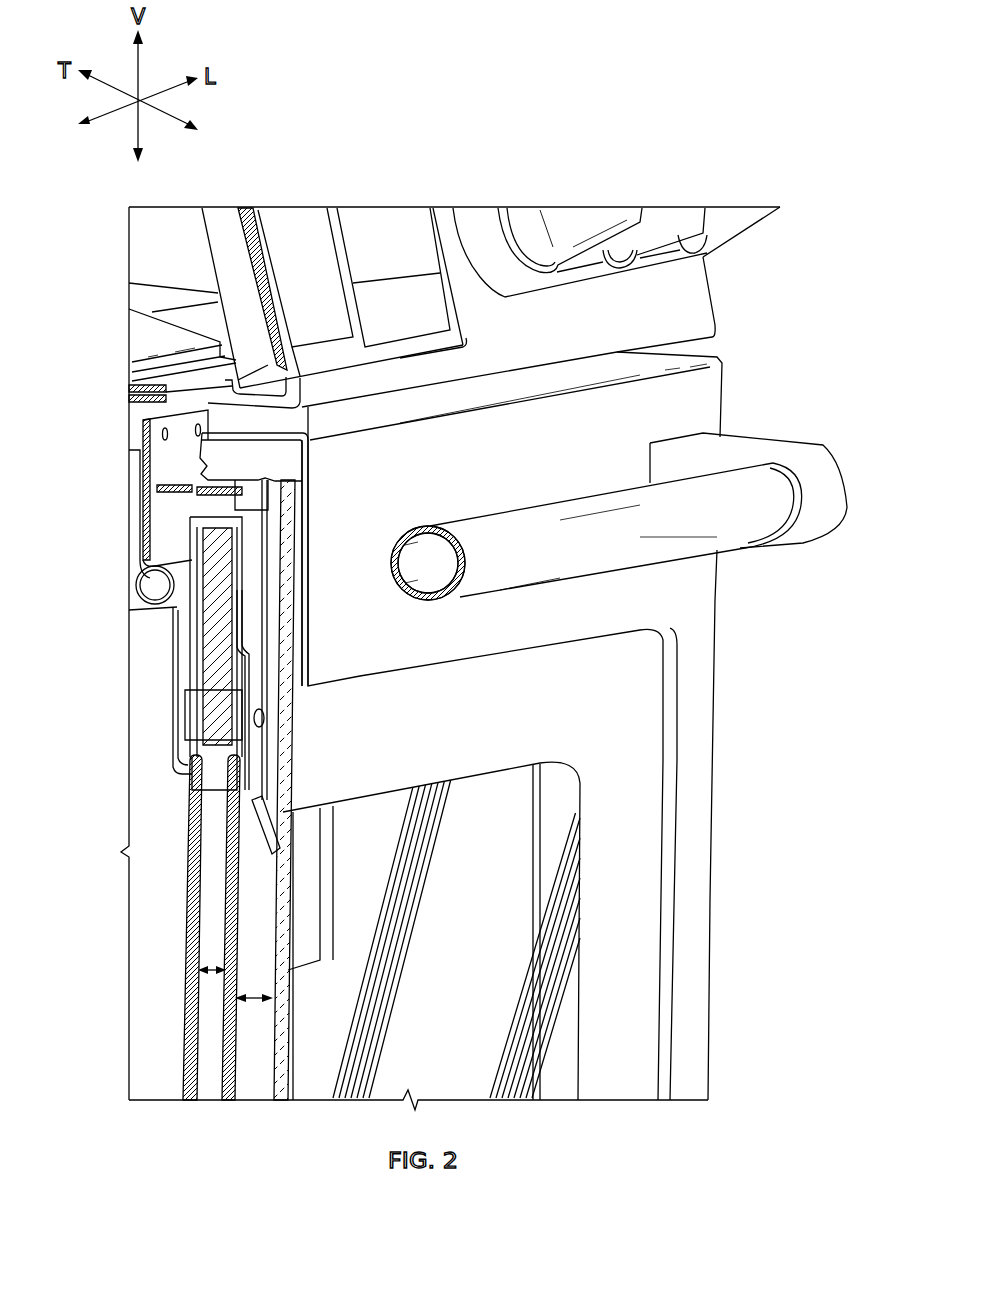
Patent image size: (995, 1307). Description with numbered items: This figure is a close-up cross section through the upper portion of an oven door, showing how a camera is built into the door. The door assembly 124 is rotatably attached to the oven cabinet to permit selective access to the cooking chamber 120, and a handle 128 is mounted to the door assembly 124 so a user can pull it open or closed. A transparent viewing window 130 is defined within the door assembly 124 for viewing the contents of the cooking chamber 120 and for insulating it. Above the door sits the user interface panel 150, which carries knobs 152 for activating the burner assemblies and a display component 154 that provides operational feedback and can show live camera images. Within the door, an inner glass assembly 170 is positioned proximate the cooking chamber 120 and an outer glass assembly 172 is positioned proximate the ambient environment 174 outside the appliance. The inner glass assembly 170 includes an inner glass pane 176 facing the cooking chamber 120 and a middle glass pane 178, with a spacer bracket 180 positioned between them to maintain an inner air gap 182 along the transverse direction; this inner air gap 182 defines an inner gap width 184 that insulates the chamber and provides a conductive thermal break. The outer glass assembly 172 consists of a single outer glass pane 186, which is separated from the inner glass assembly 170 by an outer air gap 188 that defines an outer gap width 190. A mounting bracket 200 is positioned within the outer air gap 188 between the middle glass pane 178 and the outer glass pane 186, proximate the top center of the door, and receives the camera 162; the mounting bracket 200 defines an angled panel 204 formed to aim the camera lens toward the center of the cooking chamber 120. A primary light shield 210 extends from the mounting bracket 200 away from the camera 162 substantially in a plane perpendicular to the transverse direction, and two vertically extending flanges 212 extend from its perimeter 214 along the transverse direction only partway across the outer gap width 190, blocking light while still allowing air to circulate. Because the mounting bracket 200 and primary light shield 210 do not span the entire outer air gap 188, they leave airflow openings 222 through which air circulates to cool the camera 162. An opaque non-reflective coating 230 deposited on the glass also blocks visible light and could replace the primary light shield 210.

The cooking chamber 120 is at (156, 910).
The door assembly 124 is at (710, 850).
The handle 128 is at (753, 497).
The transparent viewing window 130 is at (543, 1044).
The user interface panel 150 is at (692, 308).
The knobs 152 is at (592, 228).
The display component 154 is at (290, 237).
The camera 162 is at (242, 824).
The inner glass assembly 170 is at (232, 1106).
The outer glass assembly 172 is at (257, 1104).
The ambient environment 174 is at (820, 927).
The inner glass pane 176 is at (183, 1081).
The middle glass pane 178 is at (223, 1043).
The spacer bracket 180 is at (197, 752).
The inner air gap 182 is at (206, 943).
The inner gap width 184 is at (212, 975).
The outer glass pane 186 is at (277, 1010).
The outer air gap 188 is at (260, 1091).
The outer gap width 190 is at (254, 1002).
The mounting bracket 200 is at (256, 847).
The angled panel 204 is at (270, 863).
The primary light shield 210 is at (318, 940).
The flanges 212 is at (328, 822).
The perimeter 214 is at (336, 881).
The airflow openings 222 is at (310, 812).
The coating 230 is at (540, 717).